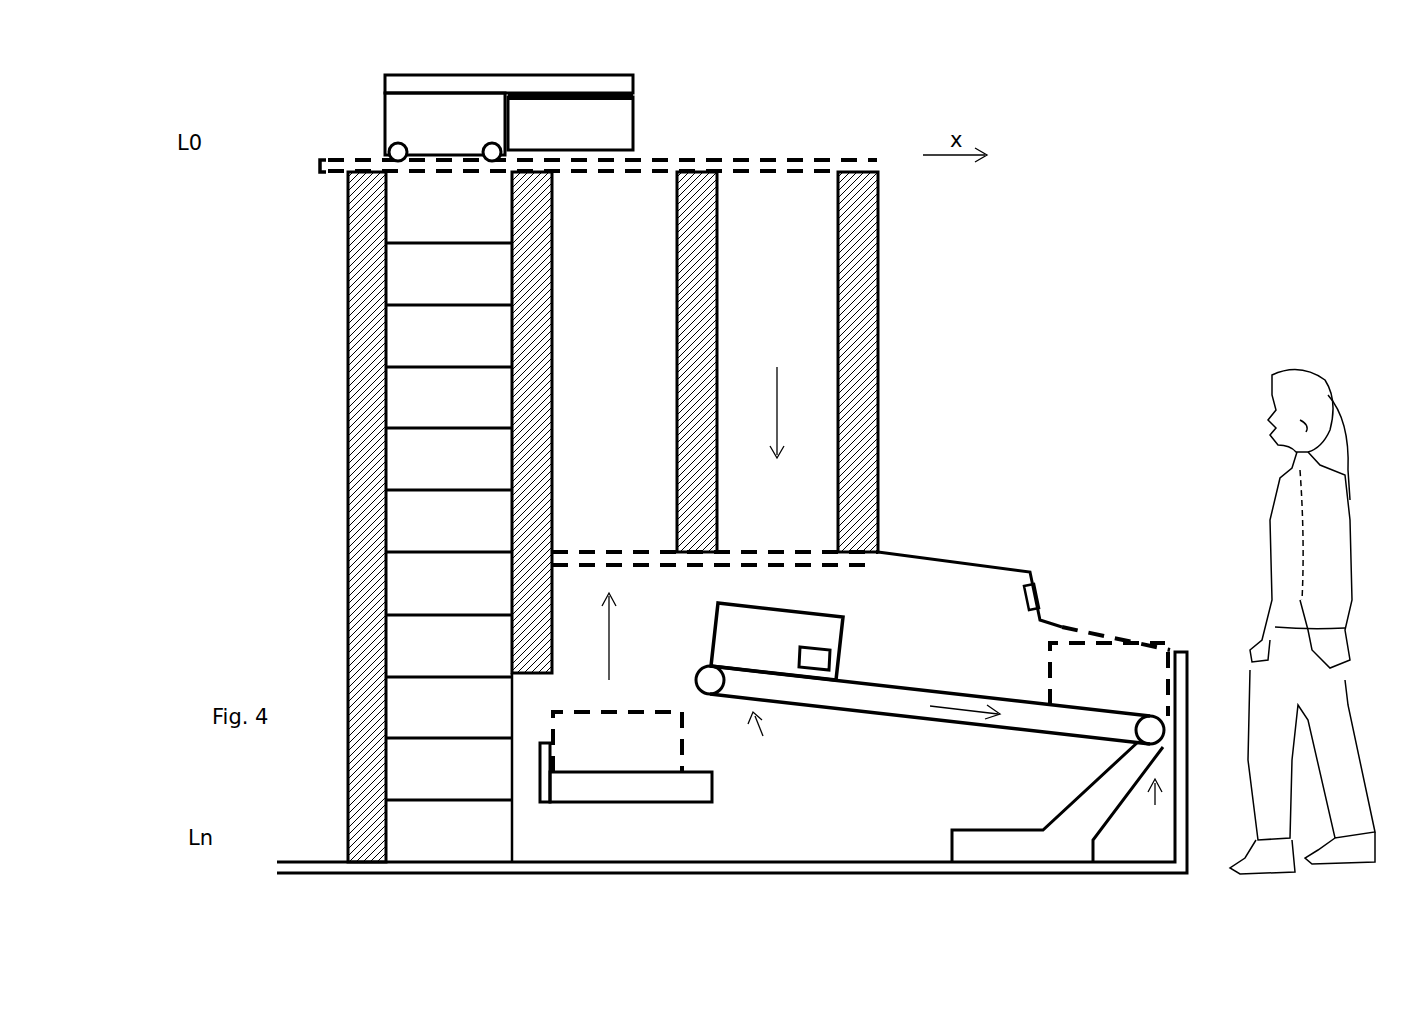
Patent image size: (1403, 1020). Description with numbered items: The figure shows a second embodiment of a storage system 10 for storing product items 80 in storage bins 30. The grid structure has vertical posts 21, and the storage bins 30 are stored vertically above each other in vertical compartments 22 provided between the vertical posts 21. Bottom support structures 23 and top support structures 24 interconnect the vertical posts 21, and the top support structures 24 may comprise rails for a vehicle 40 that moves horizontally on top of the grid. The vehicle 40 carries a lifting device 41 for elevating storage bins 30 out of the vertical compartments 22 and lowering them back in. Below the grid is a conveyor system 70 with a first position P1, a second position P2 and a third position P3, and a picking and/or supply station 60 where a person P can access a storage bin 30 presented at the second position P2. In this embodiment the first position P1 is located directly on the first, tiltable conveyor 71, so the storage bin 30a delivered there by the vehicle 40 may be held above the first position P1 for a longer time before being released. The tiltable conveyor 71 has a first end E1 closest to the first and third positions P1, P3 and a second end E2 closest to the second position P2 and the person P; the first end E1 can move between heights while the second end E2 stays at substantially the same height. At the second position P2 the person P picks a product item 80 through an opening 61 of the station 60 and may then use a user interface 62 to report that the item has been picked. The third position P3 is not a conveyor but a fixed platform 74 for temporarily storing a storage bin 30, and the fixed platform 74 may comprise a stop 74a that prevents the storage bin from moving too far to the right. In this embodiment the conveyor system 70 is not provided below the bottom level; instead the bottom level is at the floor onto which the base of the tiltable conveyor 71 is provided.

The storage system 10 is at (308, 170).
The vertical post 21 is at (368, 458).
The vertical compartment 22 is at (400, 217).
The bottom support structure 23 is at (318, 861).
The top support structure 24 is at (820, 160).
The storage bin 30 is at (427, 527).
The storage bin at first position 30a is at (725, 625).
The vehicle 40 is at (418, 120).
The lifting device 41 is at (572, 88).
The picking and/or supply station 60 is at (939, 648).
The opening 61 is at (1072, 622).
The user interface 62 is at (1024, 590).
The conveyor system 70 is at (453, 682).
The first, tiltable conveyor 71 is at (1040, 716).
The fixed platform 74 is at (697, 793).
The stop 74a is at (557, 775).
The product item 80 is at (848, 648).
The person P is at (1340, 375).
The first position P1 is at (818, 637).
The second position P2 is at (1109, 679).
The third position P3 is at (617, 742).
The first end E1 is at (763, 742).
The second end E2 is at (1158, 810).